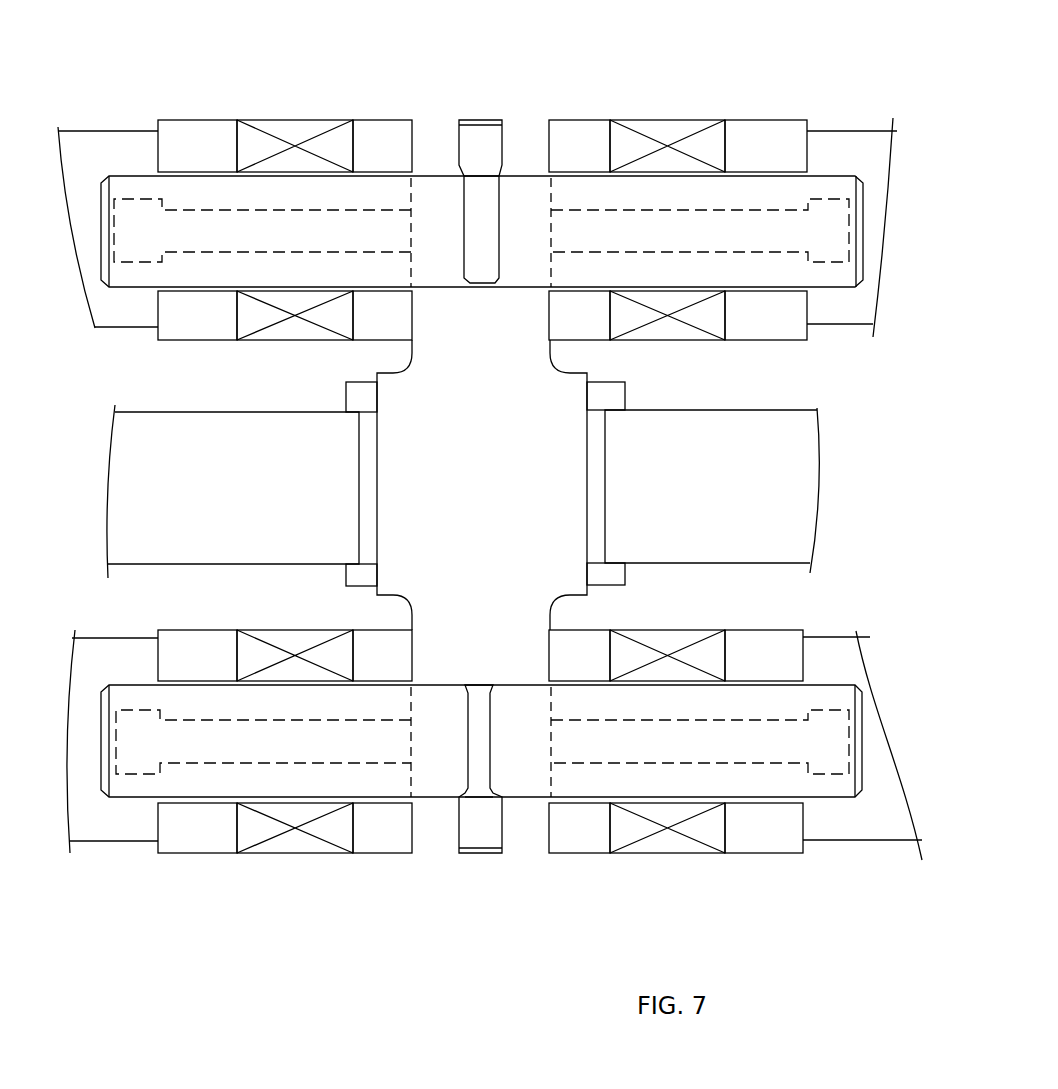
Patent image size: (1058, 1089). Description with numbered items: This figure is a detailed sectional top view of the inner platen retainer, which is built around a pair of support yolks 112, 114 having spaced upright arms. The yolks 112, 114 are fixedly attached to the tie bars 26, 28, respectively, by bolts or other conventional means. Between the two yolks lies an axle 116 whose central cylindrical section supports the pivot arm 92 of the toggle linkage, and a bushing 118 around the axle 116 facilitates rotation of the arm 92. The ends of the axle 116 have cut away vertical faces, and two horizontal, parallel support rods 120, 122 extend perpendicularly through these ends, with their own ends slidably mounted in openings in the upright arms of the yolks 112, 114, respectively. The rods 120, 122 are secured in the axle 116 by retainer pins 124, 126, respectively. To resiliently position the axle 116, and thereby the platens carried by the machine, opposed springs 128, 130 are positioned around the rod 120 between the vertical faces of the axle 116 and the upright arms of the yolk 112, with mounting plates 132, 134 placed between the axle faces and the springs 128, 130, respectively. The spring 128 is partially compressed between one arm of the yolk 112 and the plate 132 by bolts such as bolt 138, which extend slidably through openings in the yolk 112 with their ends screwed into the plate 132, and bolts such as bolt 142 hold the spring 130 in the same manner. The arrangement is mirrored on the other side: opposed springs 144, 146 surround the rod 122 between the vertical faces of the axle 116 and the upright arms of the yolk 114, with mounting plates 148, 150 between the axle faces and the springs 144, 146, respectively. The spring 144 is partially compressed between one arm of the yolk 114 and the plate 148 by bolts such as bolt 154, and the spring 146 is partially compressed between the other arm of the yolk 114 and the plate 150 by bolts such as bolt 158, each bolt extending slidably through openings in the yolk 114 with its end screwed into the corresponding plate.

The tie bar 26 is at (855, 660).
The tie bar 28 is at (863, 299).
The pivot arm 92 is at (708, 501).
The support yolk 112 is at (777, 842).
The support yolk 114 is at (765, 125).
The axle 116 is at (461, 484).
The bushing 118 is at (595, 484).
The support rod 120 is at (512, 700).
The support rod 122 is at (445, 273).
The retainer pin 124 is at (477, 832).
The retainer pin 126 is at (480, 133).
The spring 128 is at (672, 847).
The spring 130 is at (273, 847).
The mounting plate 132 is at (583, 840).
The mounting plate 134 is at (378, 843).
The bolt 138 is at (716, 754).
The bolt 142 is at (216, 754).
The spring 144 is at (668, 123).
The spring 146 is at (321, 122).
The mounting plate 148 is at (577, 137).
The mounting plate 150 is at (378, 125).
The bolt 154 is at (681, 246).
The bolt 158 is at (226, 246).